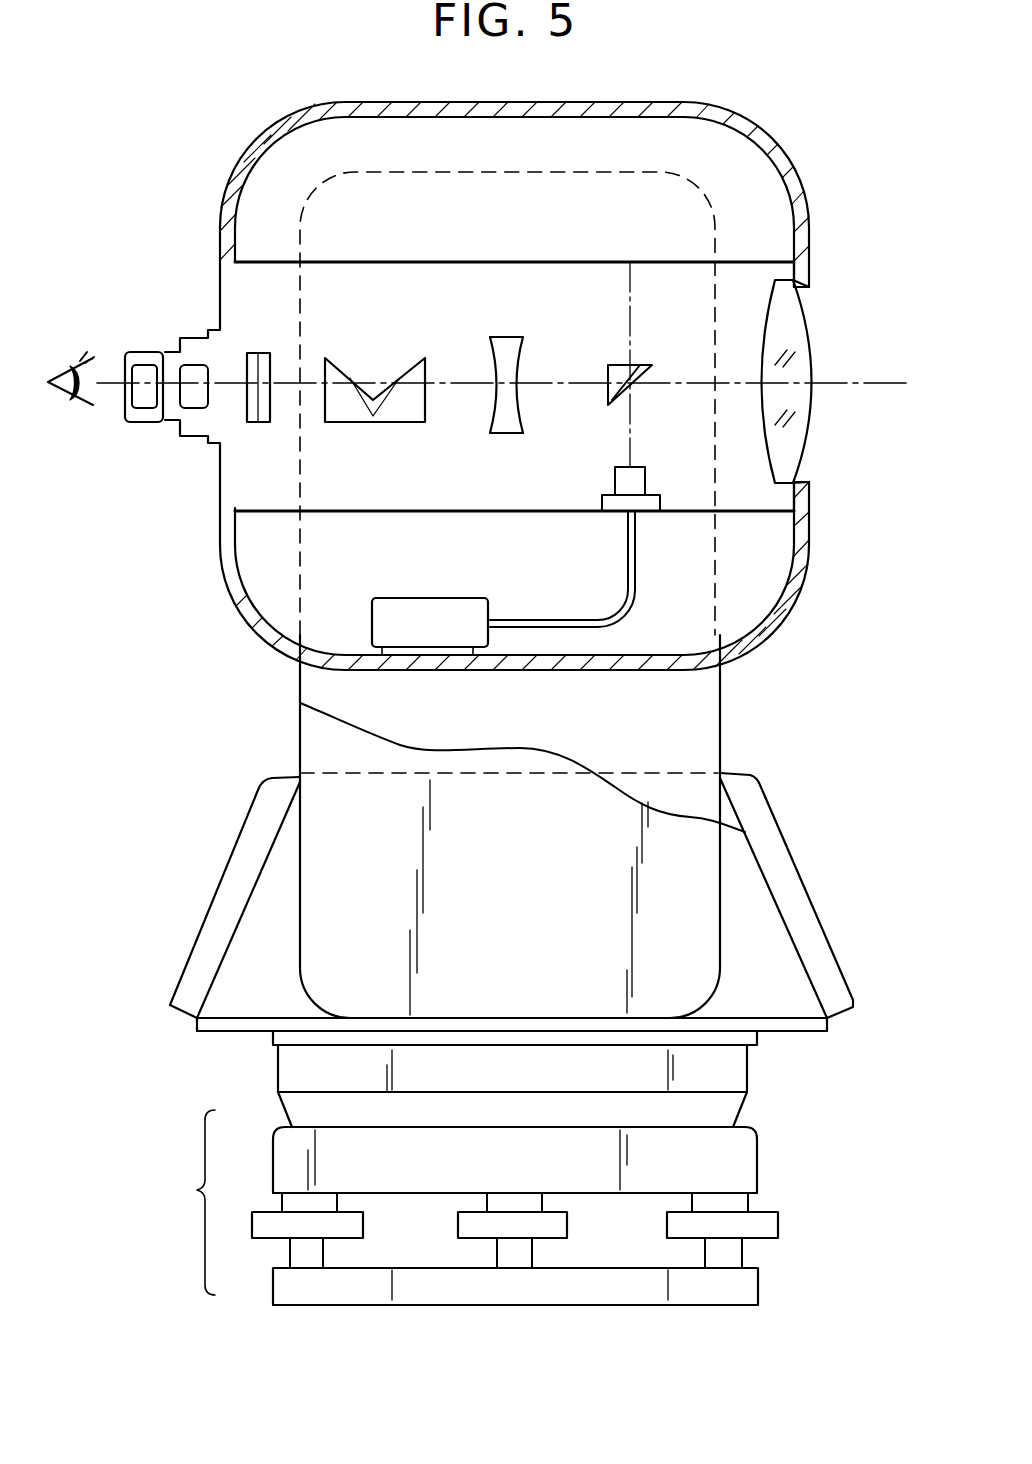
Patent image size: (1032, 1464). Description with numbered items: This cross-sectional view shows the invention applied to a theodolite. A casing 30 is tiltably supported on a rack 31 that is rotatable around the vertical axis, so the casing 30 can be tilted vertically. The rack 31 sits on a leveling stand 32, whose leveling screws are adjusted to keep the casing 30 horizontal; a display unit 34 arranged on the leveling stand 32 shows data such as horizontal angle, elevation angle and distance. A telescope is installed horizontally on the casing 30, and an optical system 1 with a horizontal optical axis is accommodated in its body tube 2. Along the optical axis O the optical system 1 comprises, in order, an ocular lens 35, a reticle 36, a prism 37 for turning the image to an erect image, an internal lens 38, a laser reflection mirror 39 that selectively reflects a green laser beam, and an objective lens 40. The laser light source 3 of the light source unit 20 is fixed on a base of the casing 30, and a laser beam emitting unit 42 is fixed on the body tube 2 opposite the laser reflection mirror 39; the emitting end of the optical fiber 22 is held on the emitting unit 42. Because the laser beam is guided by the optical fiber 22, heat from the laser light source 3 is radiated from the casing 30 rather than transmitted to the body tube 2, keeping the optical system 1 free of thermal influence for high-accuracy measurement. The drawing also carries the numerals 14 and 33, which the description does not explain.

The optical system 1 is at (548, 304).
The body tube 2 is at (685, 257).
The laser light source 3 is at (370, 620).
The upper partition plate 14 is at (350, 258).
The light source unit 20 is at (524, 594).
The optical fiber 22 is at (635, 570).
The casing 30 is at (797, 178).
The rack 31 is at (300, 727).
The leveling stand 32 is at (200, 1189).
The leveling screw plate 33 is at (778, 1233).
The display unit 34 is at (808, 888).
The ocular lens 35 is at (147, 410).
The reticle 36 is at (260, 423).
The prism 37 is at (390, 423).
The internal lens 38 is at (493, 338).
The laser reflection mirror 39 is at (630, 362).
The objective lens 40 is at (792, 330).
The laser beam emitting unit 42 is at (613, 480).
The optical axis O is at (837, 381).